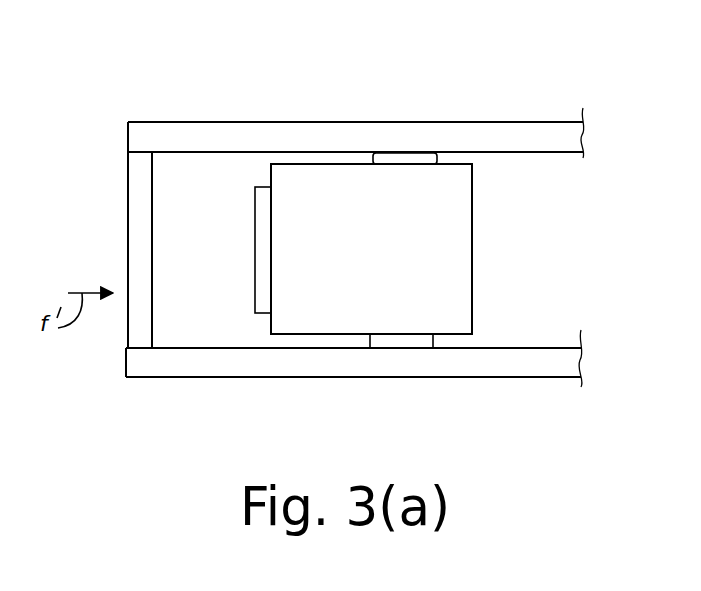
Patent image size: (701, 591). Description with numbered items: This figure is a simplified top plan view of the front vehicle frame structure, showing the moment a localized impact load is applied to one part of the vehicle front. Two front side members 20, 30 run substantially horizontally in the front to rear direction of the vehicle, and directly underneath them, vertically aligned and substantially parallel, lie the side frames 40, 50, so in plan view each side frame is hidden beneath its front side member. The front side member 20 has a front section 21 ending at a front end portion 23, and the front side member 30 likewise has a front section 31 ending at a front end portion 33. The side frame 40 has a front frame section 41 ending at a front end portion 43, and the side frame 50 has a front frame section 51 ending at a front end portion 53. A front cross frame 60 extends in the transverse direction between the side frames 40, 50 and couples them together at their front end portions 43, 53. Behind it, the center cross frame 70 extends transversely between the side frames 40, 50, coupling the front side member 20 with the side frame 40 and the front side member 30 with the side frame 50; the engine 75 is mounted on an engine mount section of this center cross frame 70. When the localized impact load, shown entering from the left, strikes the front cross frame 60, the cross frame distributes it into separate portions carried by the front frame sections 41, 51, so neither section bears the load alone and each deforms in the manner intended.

The front side member 20 is at (524, 119).
The front section 21 is at (291, 138).
The front end portion 23 is at (147, 138).
The front frame section 41 is at (224, 145).
The front end portion 43 is at (141, 138).
The side frame 40 is at (378, 118).
The front side member 30 is at (517, 381).
The front section 31 is at (310, 367).
The front end portion 33 is at (143, 363).
The front frame section 51 is at (220, 363).
The front end portion 53 is at (133, 357).
The side frame 50 is at (388, 384).
The front cross frame 60 is at (128, 190).
The engine 75 is at (443, 200).
The center cross frame 70 is at (417, 343).